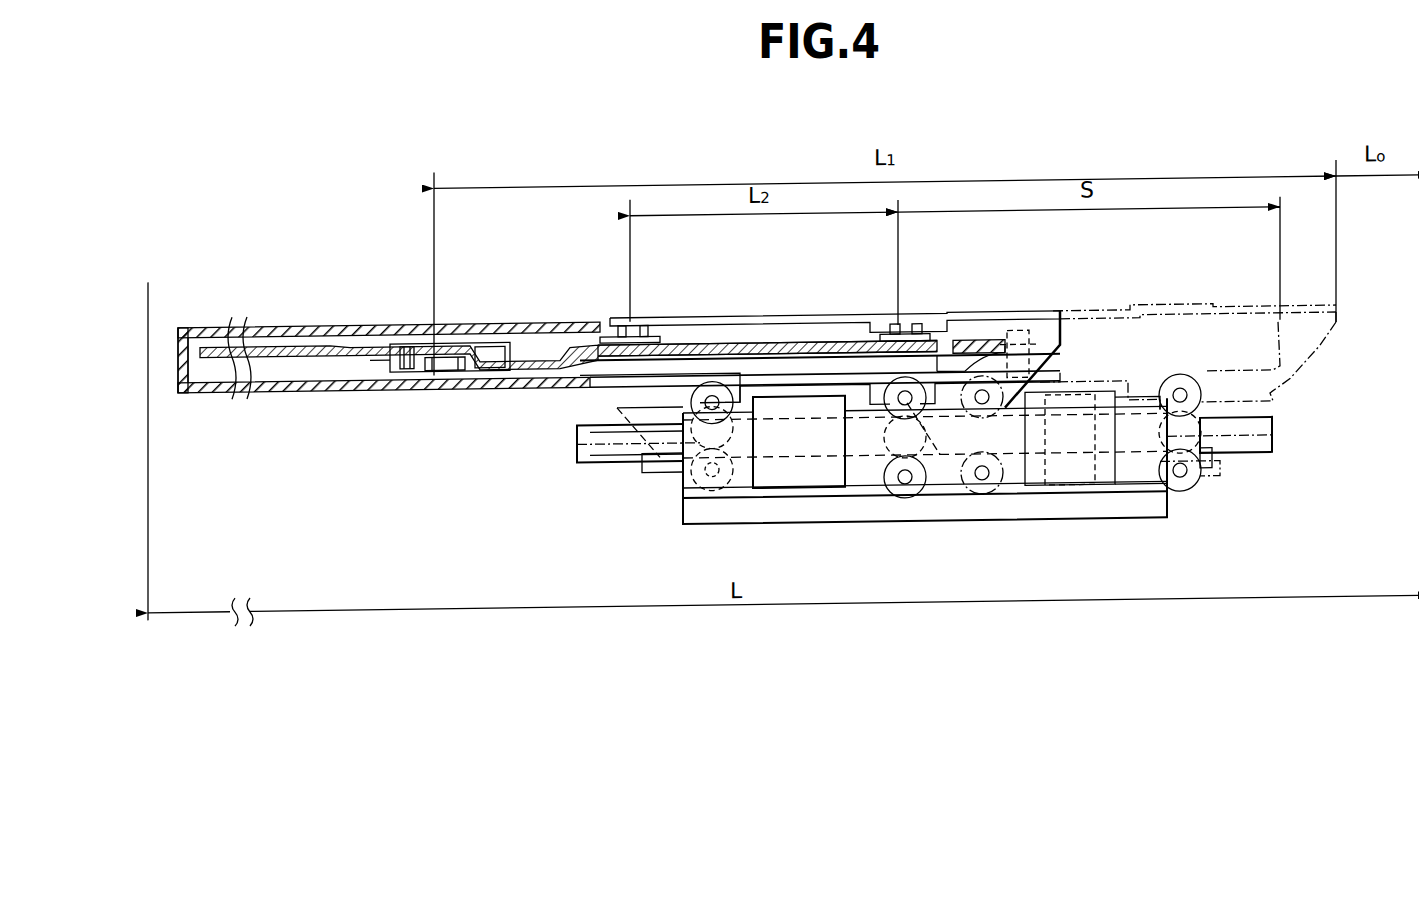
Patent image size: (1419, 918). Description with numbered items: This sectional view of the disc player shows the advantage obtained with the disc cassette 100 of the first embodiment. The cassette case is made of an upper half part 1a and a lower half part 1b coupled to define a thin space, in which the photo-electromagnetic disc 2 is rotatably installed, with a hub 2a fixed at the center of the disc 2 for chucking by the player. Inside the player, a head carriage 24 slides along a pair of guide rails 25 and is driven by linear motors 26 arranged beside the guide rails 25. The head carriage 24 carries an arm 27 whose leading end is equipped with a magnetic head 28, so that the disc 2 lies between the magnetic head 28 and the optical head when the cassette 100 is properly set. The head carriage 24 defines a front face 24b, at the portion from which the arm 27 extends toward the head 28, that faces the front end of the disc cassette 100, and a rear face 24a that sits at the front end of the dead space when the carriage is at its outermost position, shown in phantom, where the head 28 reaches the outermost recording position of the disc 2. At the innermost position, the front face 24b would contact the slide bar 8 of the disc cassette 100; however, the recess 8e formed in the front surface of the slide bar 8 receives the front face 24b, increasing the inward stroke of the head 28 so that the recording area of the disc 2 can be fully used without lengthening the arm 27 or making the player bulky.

The disc cassette 100 is at (352, 311).
The upper half part 1a is at (205, 318).
The lower half part 1b is at (205, 382).
The photo-electromagnetic disc 2 is at (780, 341).
The hub 2a is at (488, 363).
The slide bar 8 is at (975, 342).
The recess 8e is at (1018, 355).
The head carriage 24 is at (1043, 356).
The rear face 24a is at (1336, 334).
The front face 24b is at (942, 383).
The guide rails 25 is at (590, 435).
The linear motors 26 is at (833, 489).
The arm 27 is at (730, 315).
The magnetic head 28 is at (650, 324).